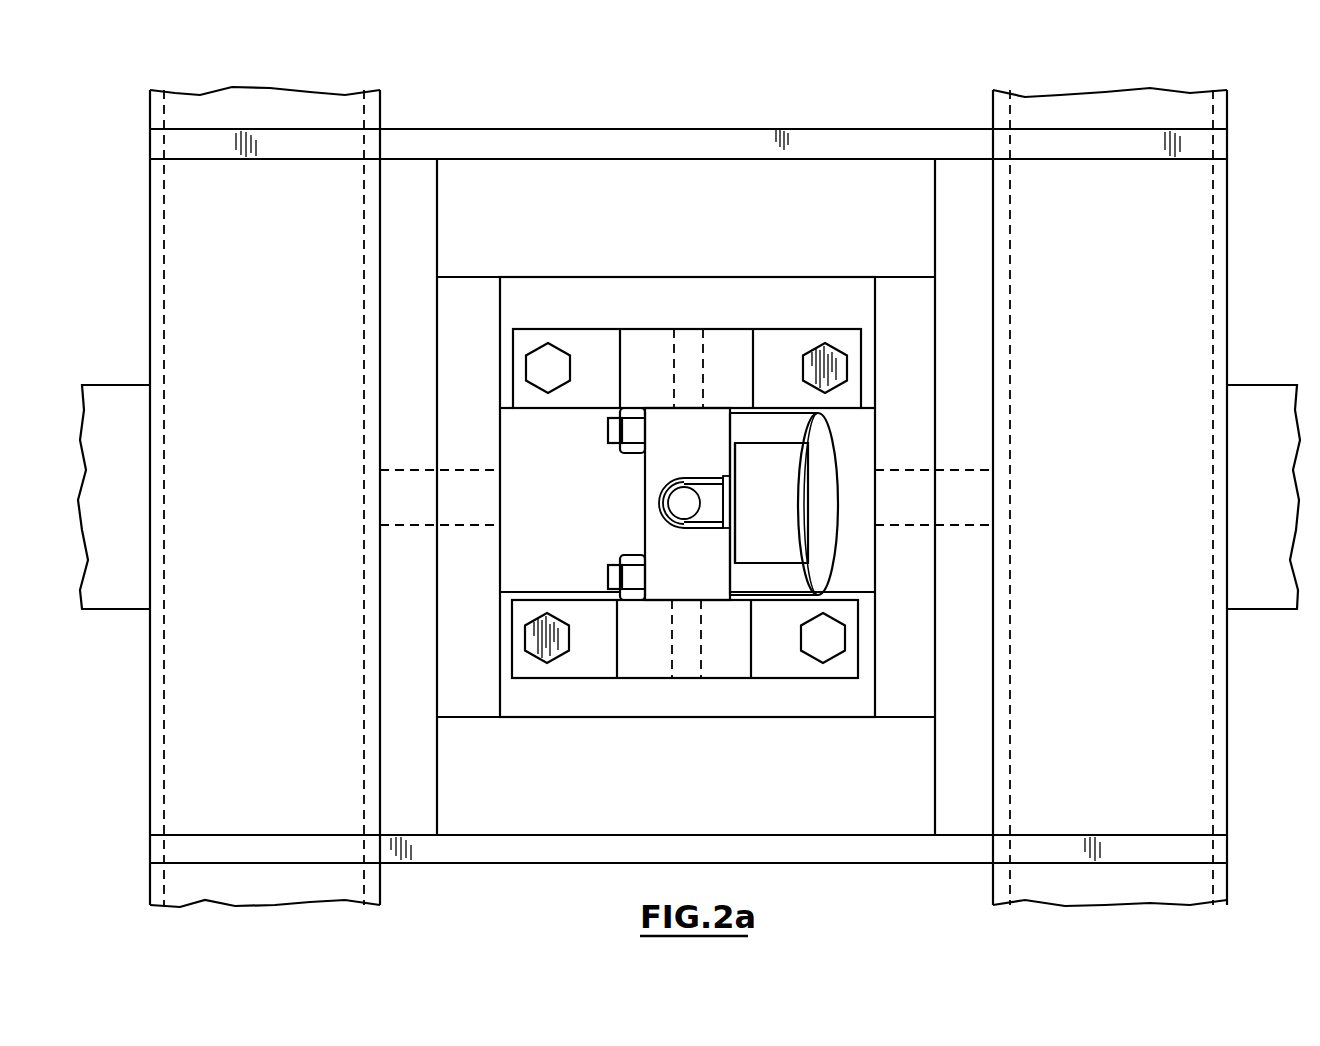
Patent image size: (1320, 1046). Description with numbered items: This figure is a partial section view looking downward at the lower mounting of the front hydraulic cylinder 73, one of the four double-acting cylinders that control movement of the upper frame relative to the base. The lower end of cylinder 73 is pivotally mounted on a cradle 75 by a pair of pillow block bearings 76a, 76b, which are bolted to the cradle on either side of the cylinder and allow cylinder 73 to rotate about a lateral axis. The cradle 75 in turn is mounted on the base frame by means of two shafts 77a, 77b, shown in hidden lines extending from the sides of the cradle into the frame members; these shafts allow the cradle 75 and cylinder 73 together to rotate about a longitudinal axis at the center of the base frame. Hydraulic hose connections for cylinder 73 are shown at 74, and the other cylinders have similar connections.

The hydraulic cylinder 73 is at (812, 524).
The hydraulic hose connection 74 is at (683, 503).
The cradle 75 is at (750, 277).
The pillow block bearing 76a is at (646, 328).
The pillow block bearing 76b is at (730, 680).
The shaft 77a is at (403, 487).
The shaft 77b is at (972, 470).